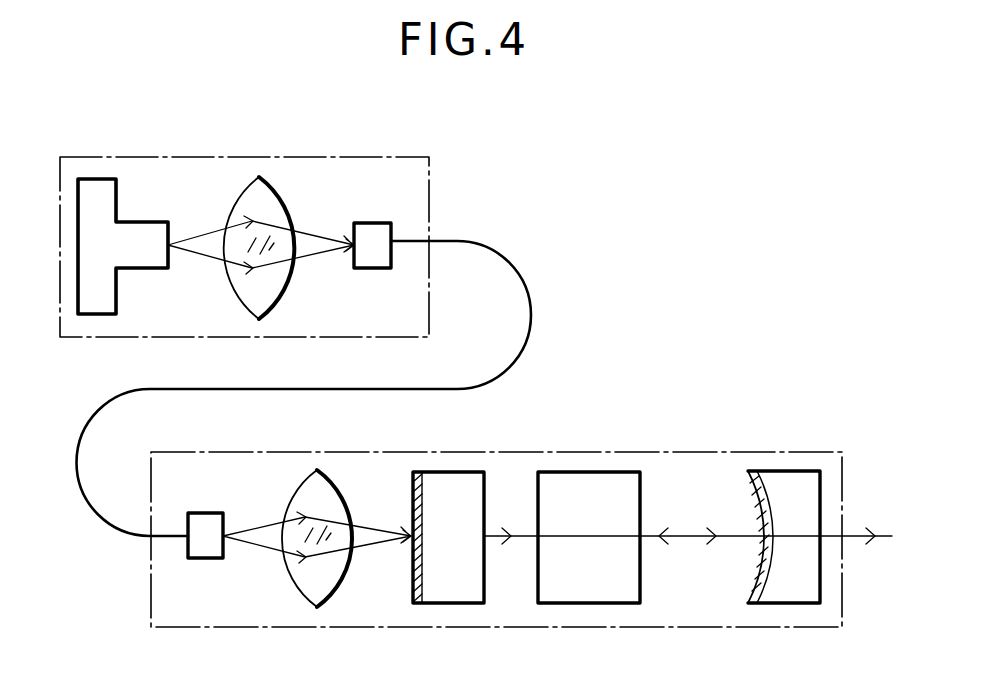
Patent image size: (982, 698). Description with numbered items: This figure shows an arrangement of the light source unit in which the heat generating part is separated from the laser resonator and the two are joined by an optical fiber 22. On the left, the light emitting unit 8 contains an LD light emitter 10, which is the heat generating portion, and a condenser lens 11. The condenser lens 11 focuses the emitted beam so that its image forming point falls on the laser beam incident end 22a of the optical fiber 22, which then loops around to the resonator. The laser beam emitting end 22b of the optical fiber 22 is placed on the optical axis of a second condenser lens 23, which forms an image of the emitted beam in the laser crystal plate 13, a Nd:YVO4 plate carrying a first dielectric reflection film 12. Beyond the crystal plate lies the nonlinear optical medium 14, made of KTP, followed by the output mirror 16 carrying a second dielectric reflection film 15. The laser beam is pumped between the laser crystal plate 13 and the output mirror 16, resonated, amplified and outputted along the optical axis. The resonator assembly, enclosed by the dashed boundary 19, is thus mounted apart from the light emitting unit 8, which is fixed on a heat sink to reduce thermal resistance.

The light emitting unit 8 is at (190, 157).
The LD light emitter 10 is at (118, 299).
The condenser lens 11 is at (283, 298).
The first dielectric reflection film 12 is at (410, 478).
The laser crystal plate 13 is at (445, 478).
The nonlinear optical medium 14 is at (580, 603).
The second dielectric reflection film 15 is at (752, 577).
The output mirror 16 is at (795, 471).
The laser resonator unit 19 is at (527, 452).
The optical fiber 22 is at (531, 325).
The laser beam incident end 22a is at (391, 223).
The laser beam emitting end 22b is at (211, 558).
The condenser lens 23 is at (336, 594).